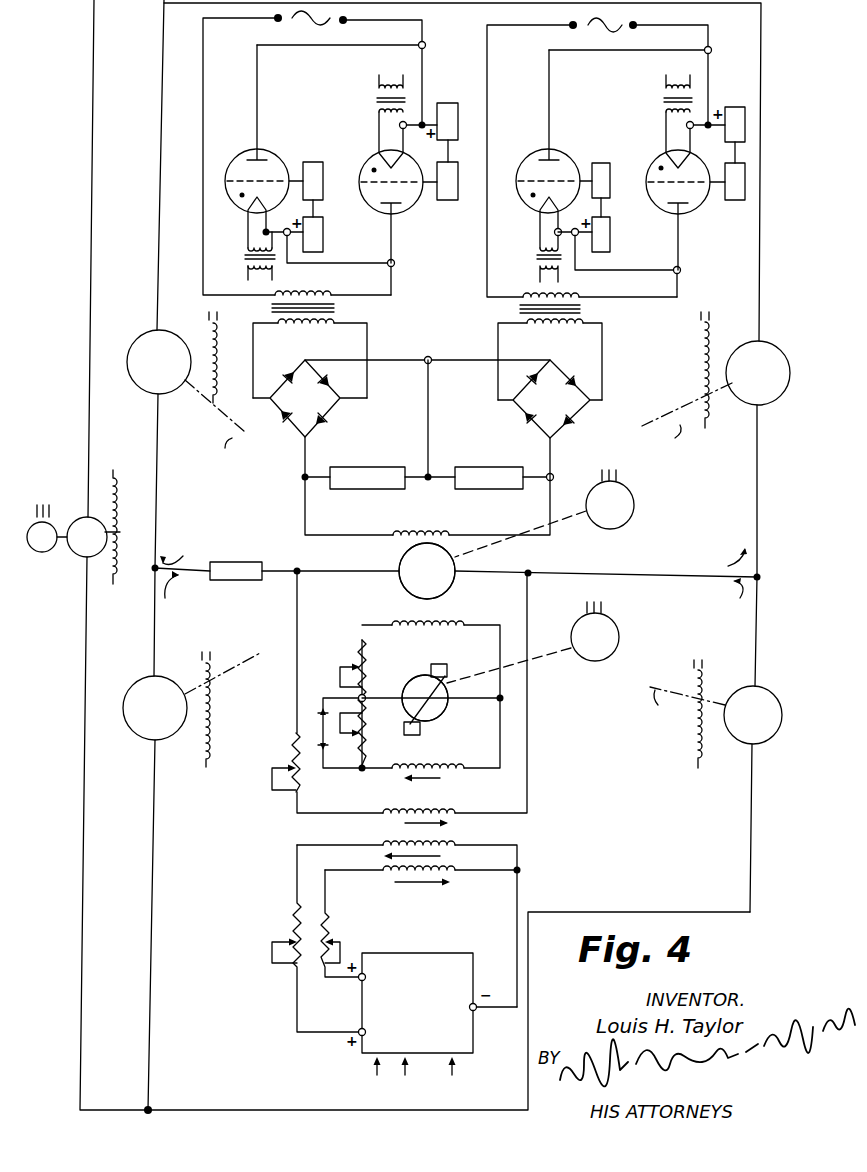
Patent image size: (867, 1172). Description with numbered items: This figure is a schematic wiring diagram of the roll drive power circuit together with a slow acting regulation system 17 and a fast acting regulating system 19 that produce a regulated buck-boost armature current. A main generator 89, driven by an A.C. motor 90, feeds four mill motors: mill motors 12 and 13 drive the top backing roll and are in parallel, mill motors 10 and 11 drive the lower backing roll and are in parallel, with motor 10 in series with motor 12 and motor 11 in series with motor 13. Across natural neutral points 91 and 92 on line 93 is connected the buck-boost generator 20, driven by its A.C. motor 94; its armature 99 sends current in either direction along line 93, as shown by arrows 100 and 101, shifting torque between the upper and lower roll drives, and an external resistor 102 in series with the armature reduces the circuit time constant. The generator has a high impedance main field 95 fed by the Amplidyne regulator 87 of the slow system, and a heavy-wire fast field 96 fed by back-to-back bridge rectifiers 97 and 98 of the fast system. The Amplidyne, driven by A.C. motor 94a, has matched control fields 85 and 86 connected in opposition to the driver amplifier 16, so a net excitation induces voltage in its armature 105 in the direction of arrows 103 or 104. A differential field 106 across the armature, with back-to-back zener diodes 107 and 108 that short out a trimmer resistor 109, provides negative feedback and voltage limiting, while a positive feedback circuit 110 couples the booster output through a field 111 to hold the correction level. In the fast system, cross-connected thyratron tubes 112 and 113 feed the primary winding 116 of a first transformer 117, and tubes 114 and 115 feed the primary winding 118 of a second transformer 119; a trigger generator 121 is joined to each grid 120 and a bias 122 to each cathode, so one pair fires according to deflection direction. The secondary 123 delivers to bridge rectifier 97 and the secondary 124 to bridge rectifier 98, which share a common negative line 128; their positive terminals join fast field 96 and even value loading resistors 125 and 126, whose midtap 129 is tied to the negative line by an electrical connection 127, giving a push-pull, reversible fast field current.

The mill motor 10 is at (136, 346).
The mill motor 11 is at (746, 680).
The mill motor 12 is at (134, 688).
The mill motor 13 is at (757, 338).
The driver amplifier 16 is at (472, 1050).
The slow acting regulation system 17 is at (577, 776).
The fast acting regulating system 19 is at (427, 340).
The buck-boost generator 20 is at (406, 560).
The control field 85 is at (456, 845).
The control field 86 is at (456, 870).
The Amplidyne regulator 87 is at (486, 730).
The main generator 89 is at (125, 529).
The A.C. motor 90 is at (42, 552).
The natural neutral point 91 is at (153, 573).
The natural neutral point 92 is at (757, 582).
The line 93 is at (638, 580).
The A.C. motor 94 is at (634, 505).
The A.C. motor 94a is at (619, 637).
The main field 95 is at (462, 625).
The fast field 96 is at (424, 536).
The bridge rectifier 97 is at (340, 403).
The bridge rectifier 98 is at (585, 407).
The armature 99 is at (401, 592).
The arrow 100 is at (457, 567).
The arrow 101 is at (453, 571).
The external resistor 102 is at (222, 562).
The arrow 103 is at (412, 880).
The arrow 104 is at (383, 856).
The armature 105 is at (415, 668).
The differential field 106 is at (442, 768).
The zener diode 107 is at (322, 712).
The zener diode 108 is at (311, 765).
The trimmer resistor 109 is at (366, 733).
The positive feedback circuit 110 is at (527, 718).
The field 111 is at (448, 812).
The thyratron tube 112 is at (246, 150).
The thyratron tube 113 is at (370, 152).
The thyratron tube 114 is at (538, 150).
The thyratron tube 115 is at (658, 152).
The primary winding 116 is at (300, 300).
The first transformer 117 is at (408, 326).
The primary winding 118 is at (553, 298).
The second transformer 119 is at (633, 326).
The grid 120 is at (272, 178).
The trigger generator 121 is at (315, 162).
The bias 122 is at (322, 240).
The secondary 123 is at (320, 330).
The secondary 124 is at (557, 330).
The loading resistor 125 is at (396, 468).
The loading resistor 126 is at (515, 469).
The electrical connection 127 is at (428, 442).
The common negative line 128 is at (470, 360).
The midtap 129 is at (420, 483).